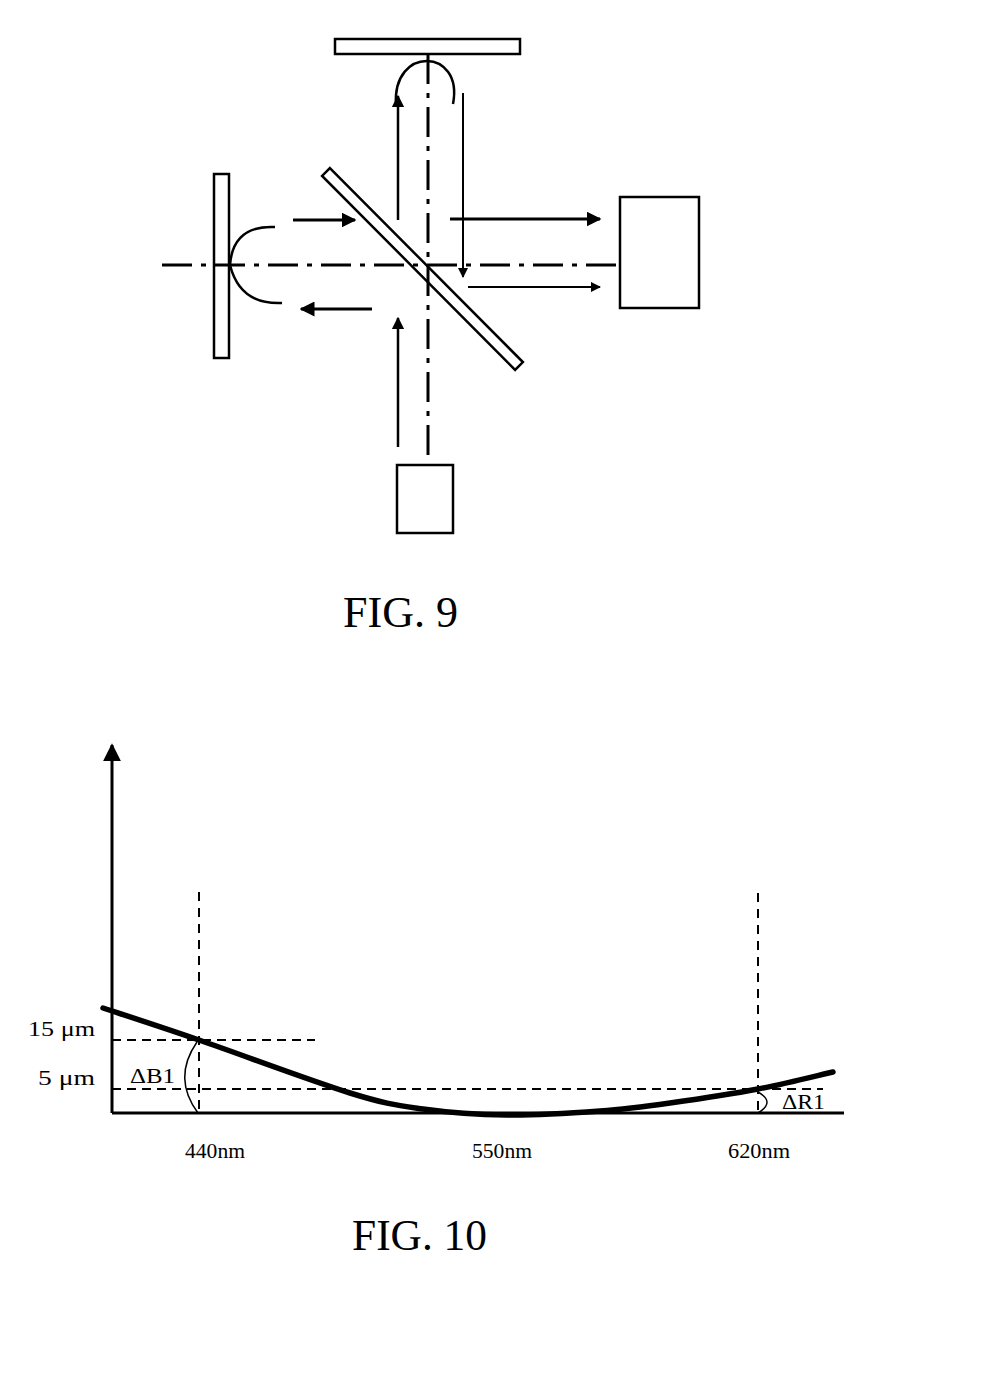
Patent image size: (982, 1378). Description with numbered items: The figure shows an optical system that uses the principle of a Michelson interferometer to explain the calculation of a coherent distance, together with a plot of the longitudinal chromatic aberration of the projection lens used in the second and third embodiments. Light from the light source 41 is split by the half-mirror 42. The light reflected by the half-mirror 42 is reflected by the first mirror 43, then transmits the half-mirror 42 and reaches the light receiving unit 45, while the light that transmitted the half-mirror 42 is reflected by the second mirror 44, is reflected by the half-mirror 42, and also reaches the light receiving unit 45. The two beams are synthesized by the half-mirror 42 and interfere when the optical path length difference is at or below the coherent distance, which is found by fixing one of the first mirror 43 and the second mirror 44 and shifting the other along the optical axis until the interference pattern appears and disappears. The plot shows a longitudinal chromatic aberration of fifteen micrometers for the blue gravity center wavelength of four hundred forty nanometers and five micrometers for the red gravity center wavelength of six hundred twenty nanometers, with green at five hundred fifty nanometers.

The light source 41 is at (397, 492).
The half-mirror 42 is at (519, 367).
The first mirror 43 is at (222, 174).
The second mirror 44 is at (337, 52).
The light receiving unit 45 is at (641, 203).